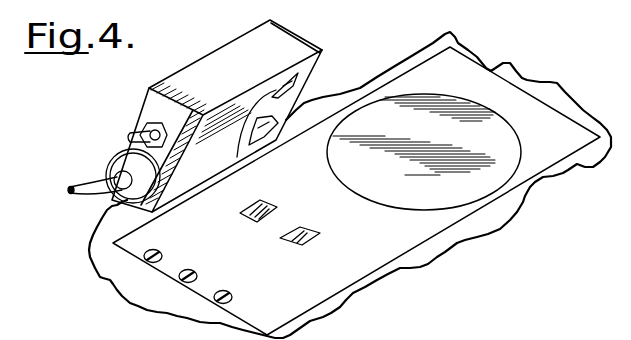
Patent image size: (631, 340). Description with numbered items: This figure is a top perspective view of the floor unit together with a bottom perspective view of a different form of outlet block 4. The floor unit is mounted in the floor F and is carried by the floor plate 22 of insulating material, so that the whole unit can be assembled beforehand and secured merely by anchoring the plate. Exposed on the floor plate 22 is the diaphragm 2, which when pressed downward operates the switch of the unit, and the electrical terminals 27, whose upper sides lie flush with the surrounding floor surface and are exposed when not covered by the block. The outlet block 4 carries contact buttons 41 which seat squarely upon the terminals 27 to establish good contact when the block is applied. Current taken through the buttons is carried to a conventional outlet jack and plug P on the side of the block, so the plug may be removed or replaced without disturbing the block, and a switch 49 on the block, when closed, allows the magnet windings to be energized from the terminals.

The outlet block 4 is at (217, 60).
The contact button 41 is at (241, 130).
The switch 49 is at (140, 133).
The outlet jack and plug P is at (132, 163).
The floor F is at (377, 72).
The diaphragm 2 is at (424, 152).
The floor plate 22 is at (356, 191).
The electrical terminals 27 is at (302, 227).